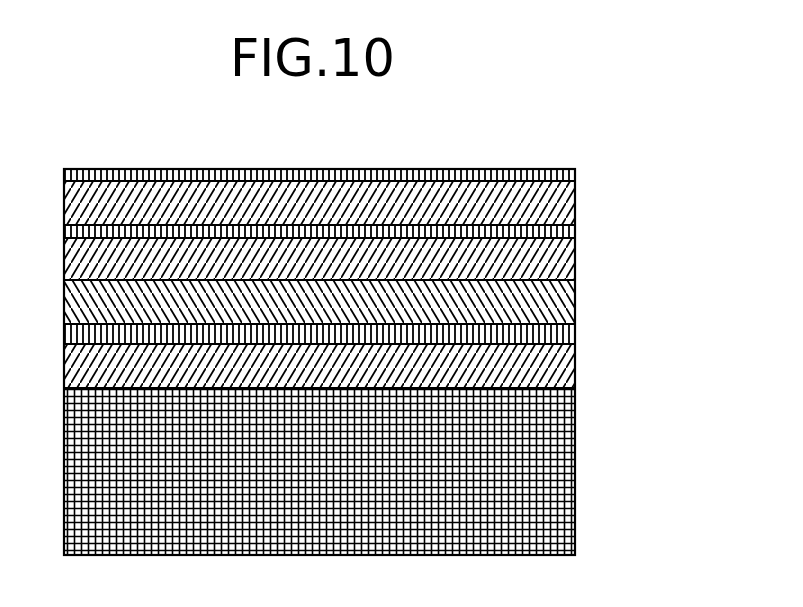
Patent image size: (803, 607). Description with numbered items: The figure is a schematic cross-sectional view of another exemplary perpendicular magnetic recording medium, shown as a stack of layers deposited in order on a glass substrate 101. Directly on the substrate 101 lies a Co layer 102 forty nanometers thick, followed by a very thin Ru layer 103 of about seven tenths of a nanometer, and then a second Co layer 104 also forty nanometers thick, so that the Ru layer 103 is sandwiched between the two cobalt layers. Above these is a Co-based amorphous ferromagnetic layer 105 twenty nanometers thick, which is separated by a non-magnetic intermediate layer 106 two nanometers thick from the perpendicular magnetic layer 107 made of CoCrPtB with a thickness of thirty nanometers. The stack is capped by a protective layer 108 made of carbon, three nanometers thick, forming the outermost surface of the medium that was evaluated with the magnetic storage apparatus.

The substrate 101 is at (558, 437).
The Co layer 102 is at (555, 363).
The Ru layer 103 is at (567, 322).
The Co layer 104 is at (567, 290).
The Co-based amorphous ferromagnetic layer 105 is at (555, 257).
The non-magnetic intermediate layer 106 is at (567, 220).
The perpendicular magnetic layer 107 is at (555, 192).
The protective layer 108 is at (567, 164).